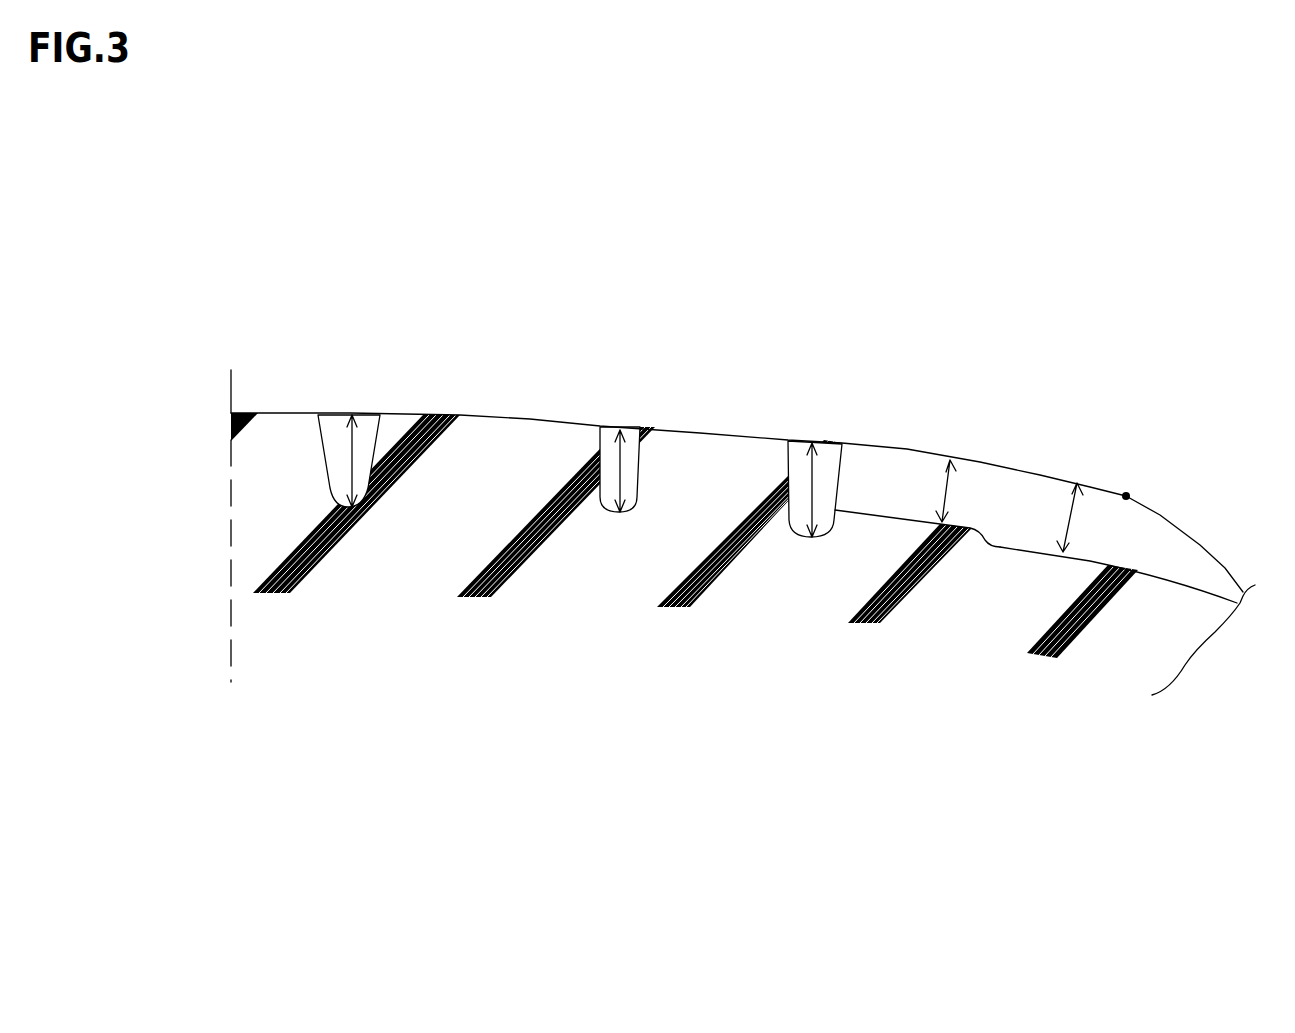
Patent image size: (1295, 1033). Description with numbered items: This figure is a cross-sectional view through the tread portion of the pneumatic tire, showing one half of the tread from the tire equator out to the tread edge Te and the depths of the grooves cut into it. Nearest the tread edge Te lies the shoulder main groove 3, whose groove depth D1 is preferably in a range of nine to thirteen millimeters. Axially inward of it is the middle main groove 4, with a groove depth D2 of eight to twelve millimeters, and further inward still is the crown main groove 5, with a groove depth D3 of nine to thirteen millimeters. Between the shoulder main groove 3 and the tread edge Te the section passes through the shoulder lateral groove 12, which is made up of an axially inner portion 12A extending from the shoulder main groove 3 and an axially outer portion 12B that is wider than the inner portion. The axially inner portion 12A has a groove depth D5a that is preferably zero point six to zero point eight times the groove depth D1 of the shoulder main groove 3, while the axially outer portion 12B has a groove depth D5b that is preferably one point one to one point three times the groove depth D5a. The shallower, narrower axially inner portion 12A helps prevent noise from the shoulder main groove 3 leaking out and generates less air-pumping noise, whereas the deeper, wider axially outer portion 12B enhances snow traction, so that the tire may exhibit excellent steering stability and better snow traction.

The shoulder main groove 3 is at (800, 467).
The middle main groove 4 is at (607, 455).
The crown main groove 5 is at (338, 440).
The shoulder lateral groove 12 is at (930, 297).
The axially inner portion 12A is at (905, 468).
The axially outer portion 12B is at (1027, 502).
The groove depth of the shoulder main groove D1 is at (813, 487).
The groove depth of the middle main groove D2 is at (620, 467).
The groove depth of the crown main groove D3 is at (352, 462).
The groove depth of the axially inner portion D5a is at (947, 492).
The groove depth of the axially outer portion D5b is at (1083, 518).
The tread edge Te is at (1126, 496).